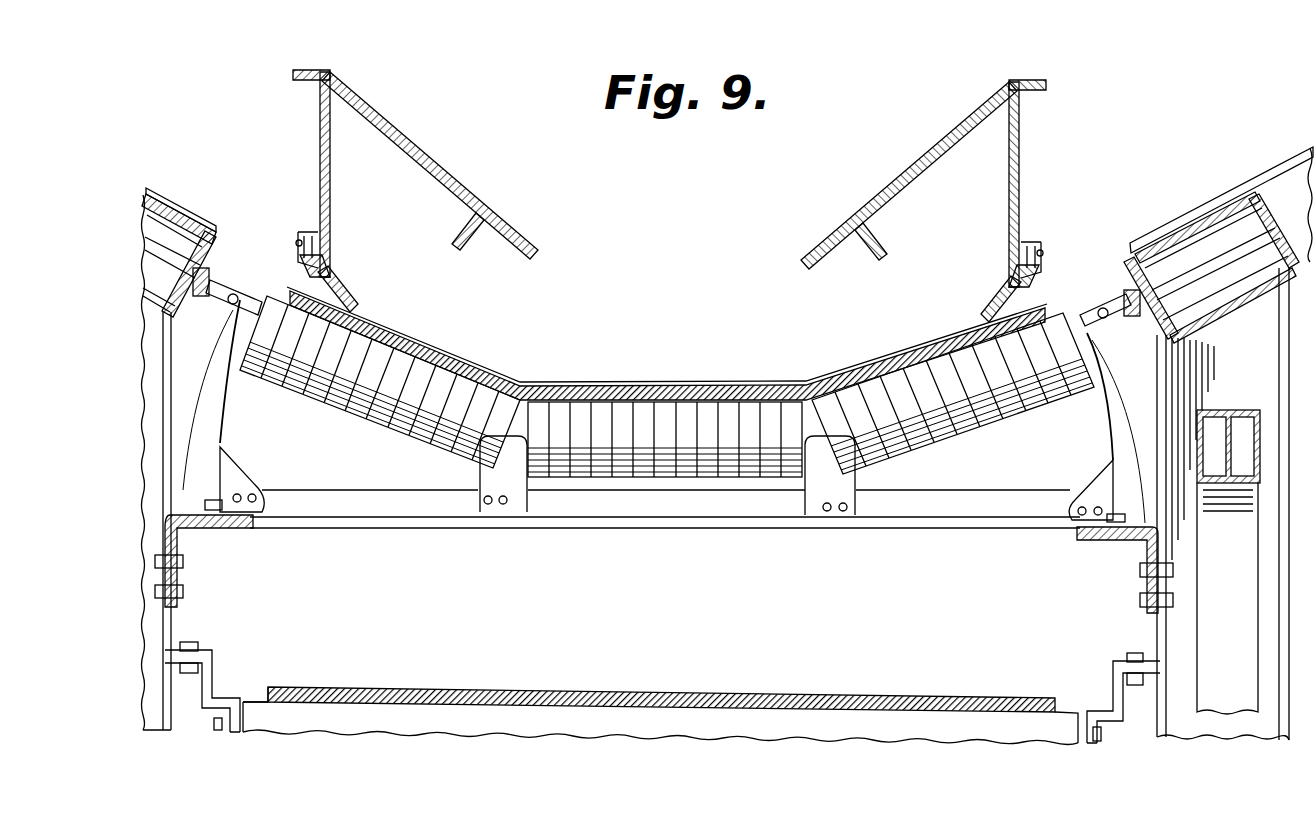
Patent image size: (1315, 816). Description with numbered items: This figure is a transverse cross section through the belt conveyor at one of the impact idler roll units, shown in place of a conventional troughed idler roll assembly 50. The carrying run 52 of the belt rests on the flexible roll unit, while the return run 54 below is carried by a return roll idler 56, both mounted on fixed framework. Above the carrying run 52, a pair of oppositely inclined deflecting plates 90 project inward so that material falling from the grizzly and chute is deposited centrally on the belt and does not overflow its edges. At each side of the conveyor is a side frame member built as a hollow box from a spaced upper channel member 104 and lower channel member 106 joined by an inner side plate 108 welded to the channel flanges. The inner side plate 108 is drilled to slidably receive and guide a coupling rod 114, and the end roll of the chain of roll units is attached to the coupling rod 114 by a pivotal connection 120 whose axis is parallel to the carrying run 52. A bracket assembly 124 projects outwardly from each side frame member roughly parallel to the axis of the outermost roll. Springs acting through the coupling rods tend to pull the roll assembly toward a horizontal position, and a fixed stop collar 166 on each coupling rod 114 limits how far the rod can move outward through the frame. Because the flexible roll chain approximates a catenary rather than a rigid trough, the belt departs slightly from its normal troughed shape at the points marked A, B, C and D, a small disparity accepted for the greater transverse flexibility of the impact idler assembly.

The troughed idler roll assembly 50 is at (436, 457).
The carrying run 52 is at (666, 383).
The return run 54 is at (722, 692).
The return roll idler 56 is at (257, 703).
The deflecting plate 90 is at (462, 186).
The upper channel member 104 is at (192, 217).
The lower channel member 106 is at (1226, 320).
The inner side plate 108 is at (214, 251).
The coupling rod 114 is at (170, 258).
The pivotal connection 120 is at (238, 292).
The bracket assembly 124 is at (160, 195).
The fixed stop collar 166 is at (200, 306).
The departure point A is at (330, 297).
The departure point B is at (520, 380).
The departure point C is at (805, 380).
The departure point D is at (1013, 308).